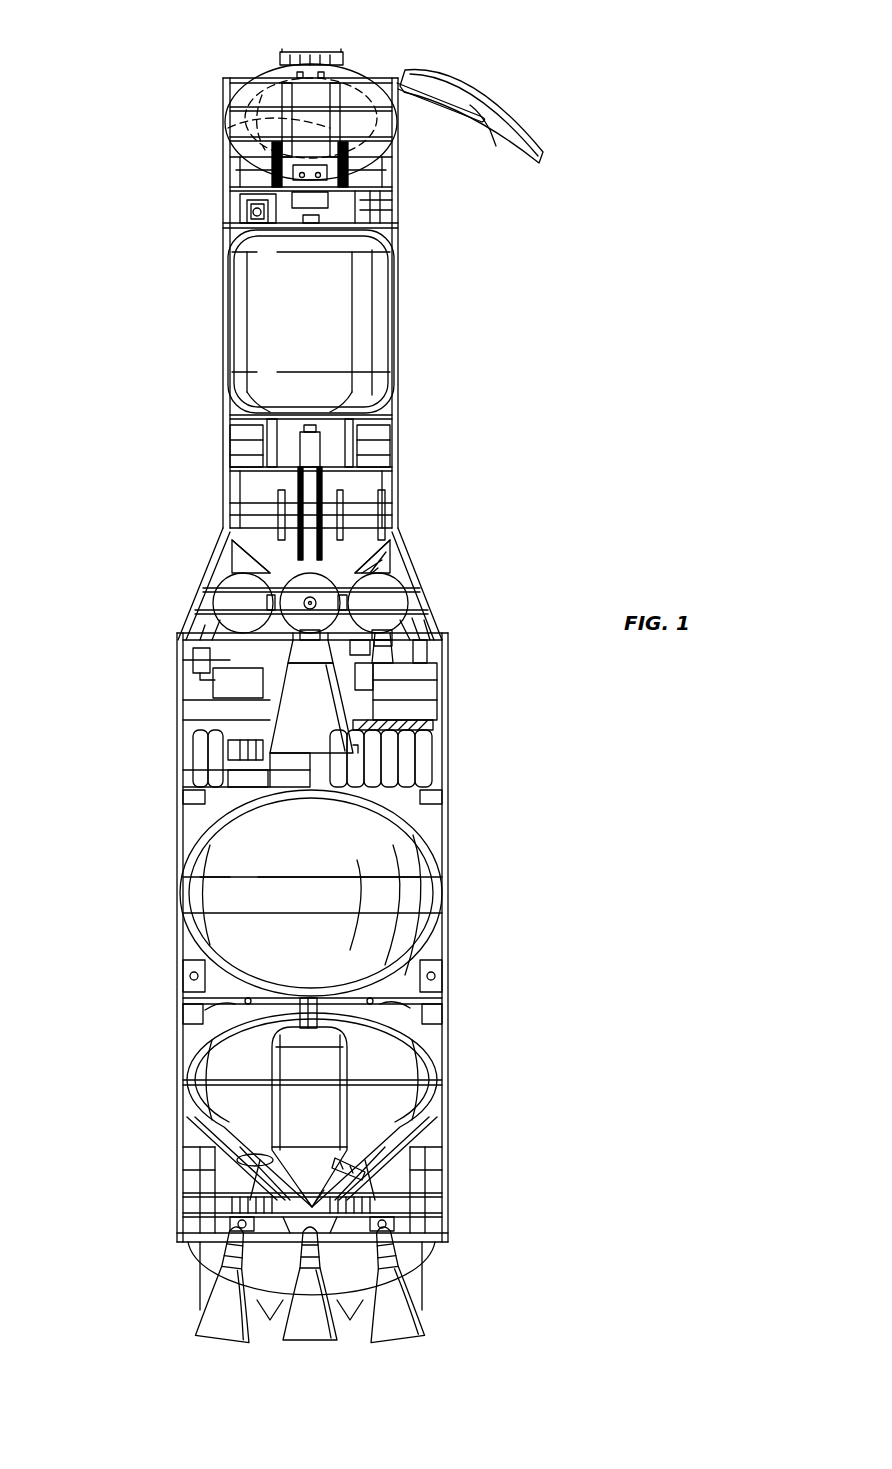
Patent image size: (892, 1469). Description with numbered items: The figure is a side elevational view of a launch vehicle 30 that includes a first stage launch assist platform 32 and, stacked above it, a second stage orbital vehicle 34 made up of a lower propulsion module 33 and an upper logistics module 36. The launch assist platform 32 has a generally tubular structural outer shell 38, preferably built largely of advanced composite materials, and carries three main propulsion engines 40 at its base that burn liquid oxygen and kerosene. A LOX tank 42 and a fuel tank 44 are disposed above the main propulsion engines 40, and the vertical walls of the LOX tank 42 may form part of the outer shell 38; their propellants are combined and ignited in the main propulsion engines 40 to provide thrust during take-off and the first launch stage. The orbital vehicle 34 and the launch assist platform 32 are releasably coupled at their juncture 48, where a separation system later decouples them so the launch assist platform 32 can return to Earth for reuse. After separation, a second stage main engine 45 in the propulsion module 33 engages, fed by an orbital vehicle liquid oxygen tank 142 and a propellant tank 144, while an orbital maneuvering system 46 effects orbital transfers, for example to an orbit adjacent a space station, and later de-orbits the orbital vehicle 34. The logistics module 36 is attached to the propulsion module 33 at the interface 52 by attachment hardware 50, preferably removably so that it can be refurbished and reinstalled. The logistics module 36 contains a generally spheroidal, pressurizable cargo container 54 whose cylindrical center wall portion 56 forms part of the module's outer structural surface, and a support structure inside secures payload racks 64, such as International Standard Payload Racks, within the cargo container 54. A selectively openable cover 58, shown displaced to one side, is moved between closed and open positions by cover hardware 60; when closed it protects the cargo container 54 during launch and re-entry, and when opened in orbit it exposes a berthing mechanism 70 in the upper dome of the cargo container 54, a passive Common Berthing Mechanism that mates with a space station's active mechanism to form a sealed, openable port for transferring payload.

The launch vehicle 30 is at (492, 370).
The launch assist platform 32 is at (108, 1340).
The propulsion module 33 is at (400, 340).
The orbital vehicle 34 is at (108, 638).
The logistics module 36 is at (405, 148).
The outer shell 38 is at (442, 958).
The main propulsion engines 40 is at (245, 1328).
The LOX tank 42 is at (300, 855).
The fuel tank 44 is at (362, 1053).
The second stage main engine 45 is at (318, 722).
The orbital maneuvering system 46 is at (380, 650).
The juncture 48 is at (440, 634).
The attachment hardware 50 is at (365, 197).
The interface 52 is at (240, 205).
The cargo container 54 is at (360, 63).
The center wall portion 56 is at (232, 150).
The cover 58 is at (528, 148).
The cover hardware 60 is at (455, 105).
The payload racks 64 is at (262, 95).
The berthing mechanism 70 is at (335, 52).
The orbital vehicle liquid oxygen tank 142 is at (363, 290).
The propellant tank 144 is at (362, 488).